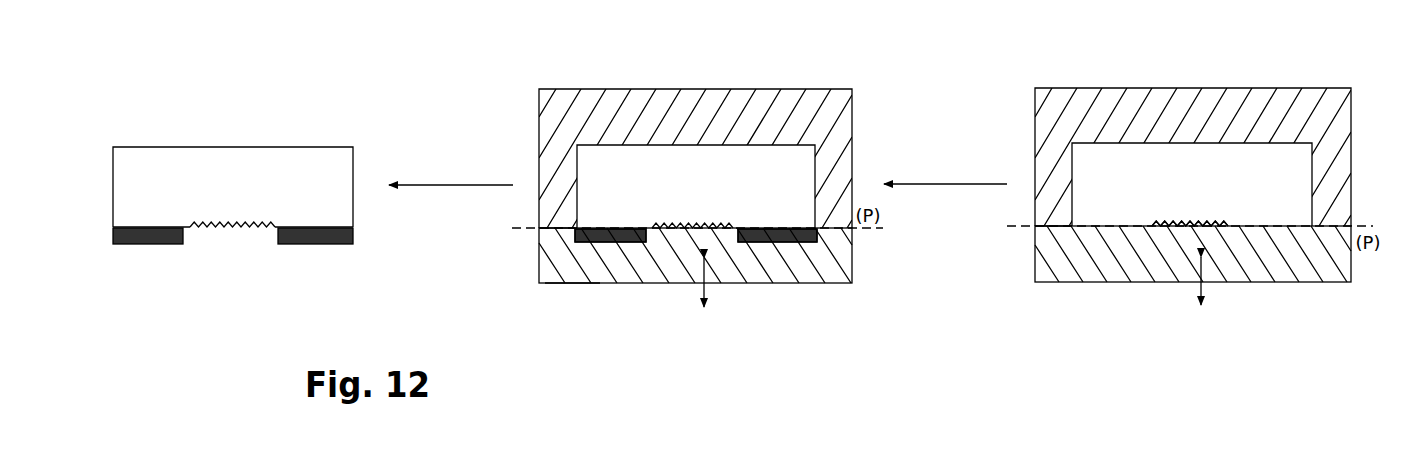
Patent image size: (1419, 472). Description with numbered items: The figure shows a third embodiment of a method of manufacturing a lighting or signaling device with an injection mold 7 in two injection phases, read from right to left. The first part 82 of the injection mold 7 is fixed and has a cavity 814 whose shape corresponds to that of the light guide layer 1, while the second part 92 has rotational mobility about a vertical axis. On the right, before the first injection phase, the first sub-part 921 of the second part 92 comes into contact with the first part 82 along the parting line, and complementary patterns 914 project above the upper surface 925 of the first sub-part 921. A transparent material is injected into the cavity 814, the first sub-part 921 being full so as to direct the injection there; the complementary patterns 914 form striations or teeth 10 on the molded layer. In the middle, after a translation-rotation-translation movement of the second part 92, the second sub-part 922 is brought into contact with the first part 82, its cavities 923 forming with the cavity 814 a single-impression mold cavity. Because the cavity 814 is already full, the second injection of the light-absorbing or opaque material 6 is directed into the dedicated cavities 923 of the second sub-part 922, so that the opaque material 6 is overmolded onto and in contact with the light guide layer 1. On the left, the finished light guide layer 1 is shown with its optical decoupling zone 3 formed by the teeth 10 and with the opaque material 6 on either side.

The light guide layer 1 is at (244, 124).
The optical decoupling zone 3 is at (238, 229).
The light-absorbing or opaque material 6 is at (160, 245).
The injection mold 7 is at (740, 300).
The striations or teeth 10 is at (1196, 223).
The first part of the injection mold 82 is at (586, 89).
The second part of the injection mold 92 is at (818, 284).
The cavity of the first part 814 is at (588, 168).
The complementary patterns 914 is at (700, 225).
The first sub-part 921 is at (1171, 262).
The second sub-part 922 is at (597, 268).
The cavities of the second sub-part 923 is at (634, 245).
The upper surface of the first sub-part 925 is at (554, 232).